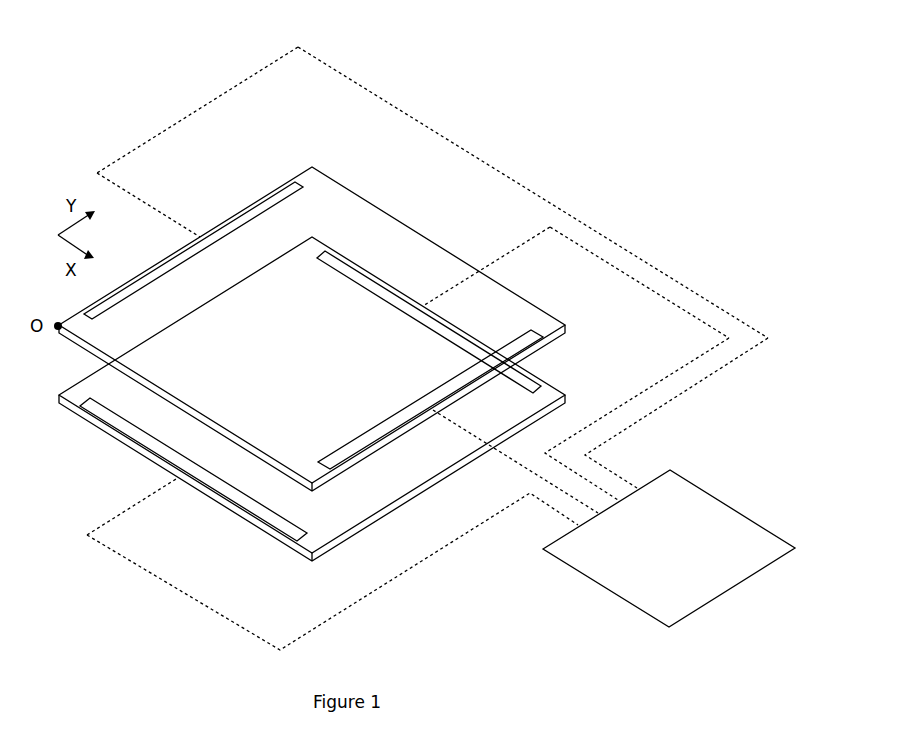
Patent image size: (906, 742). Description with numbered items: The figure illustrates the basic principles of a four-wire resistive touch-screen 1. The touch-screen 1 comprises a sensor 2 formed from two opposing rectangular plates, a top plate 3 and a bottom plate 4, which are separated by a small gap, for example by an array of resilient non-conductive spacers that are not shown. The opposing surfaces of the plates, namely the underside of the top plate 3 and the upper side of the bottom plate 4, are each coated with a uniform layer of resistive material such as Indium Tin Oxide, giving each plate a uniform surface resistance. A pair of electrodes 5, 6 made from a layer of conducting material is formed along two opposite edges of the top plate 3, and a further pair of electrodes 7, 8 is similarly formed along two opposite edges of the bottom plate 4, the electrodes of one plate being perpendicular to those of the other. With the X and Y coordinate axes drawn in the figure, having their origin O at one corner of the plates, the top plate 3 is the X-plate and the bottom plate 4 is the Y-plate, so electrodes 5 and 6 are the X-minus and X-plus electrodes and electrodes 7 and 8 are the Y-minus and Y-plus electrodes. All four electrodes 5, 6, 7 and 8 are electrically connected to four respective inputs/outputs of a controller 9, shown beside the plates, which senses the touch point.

The touch-screen 1 is at (496, 141).
The sensor 2 is at (400, 220).
The top plate 3 is at (530, 301).
The bottom plate 4 is at (78, 383).
The X− electrode 5 is at (258, 198).
The X+ electrode 6 is at (343, 447).
The Y− electrode 7 is at (140, 447).
The Y+ electrode 8 is at (350, 282).
The controller 9 is at (583, 575).